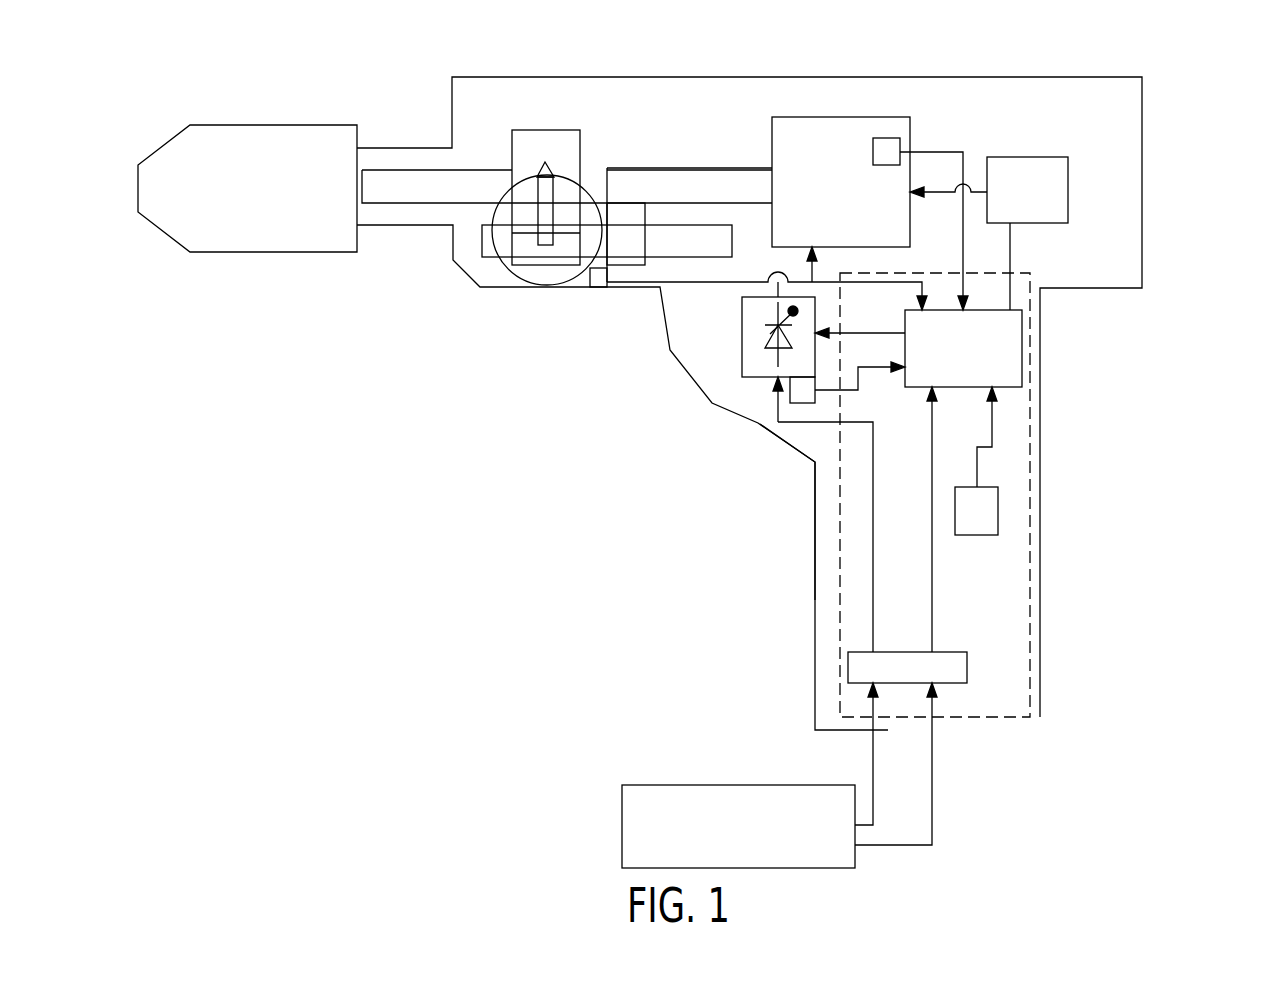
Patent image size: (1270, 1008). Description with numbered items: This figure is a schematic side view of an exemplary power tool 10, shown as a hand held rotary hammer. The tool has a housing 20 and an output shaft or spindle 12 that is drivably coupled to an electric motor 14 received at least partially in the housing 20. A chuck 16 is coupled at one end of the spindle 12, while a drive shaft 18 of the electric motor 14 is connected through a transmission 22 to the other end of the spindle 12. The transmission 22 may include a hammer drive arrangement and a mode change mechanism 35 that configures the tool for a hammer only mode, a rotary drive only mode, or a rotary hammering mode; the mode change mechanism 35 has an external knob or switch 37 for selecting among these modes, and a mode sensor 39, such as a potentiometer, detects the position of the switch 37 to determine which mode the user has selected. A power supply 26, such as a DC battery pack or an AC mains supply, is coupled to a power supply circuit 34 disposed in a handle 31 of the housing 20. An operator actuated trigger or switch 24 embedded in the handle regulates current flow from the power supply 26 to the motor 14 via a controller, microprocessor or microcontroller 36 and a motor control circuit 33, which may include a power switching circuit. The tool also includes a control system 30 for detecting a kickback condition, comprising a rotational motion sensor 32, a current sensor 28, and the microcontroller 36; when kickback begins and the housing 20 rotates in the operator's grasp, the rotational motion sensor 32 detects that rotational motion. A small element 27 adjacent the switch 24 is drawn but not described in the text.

The power tool 10 is at (1212, 127).
The spindle 12 is at (423, 203).
The electric motor 14 is at (910, 135).
The chuck 16 is at (163, 148).
The drive shaft 18 is at (617, 168).
The housing 20 is at (1075, 77).
The transmission 22 is at (680, 260).
The switch 24 is at (742, 340).
The power supply 26 is at (622, 830).
The light pipe 27 is at (802, 403).
The current sensor 28 is at (873, 150).
The control system 30 is at (840, 553).
The handle 31 is at (815, 492).
The rotational motion sensor 32 is at (998, 517).
The motor control circuit 33 is at (1055, 192).
The power supply circuit 34 is at (848, 672).
The mode change mechanism 35 is at (547, 130).
The microcontroller 36 is at (1022, 350).
The switch 37 is at (505, 272).
The mode sensor 39 is at (597, 287).